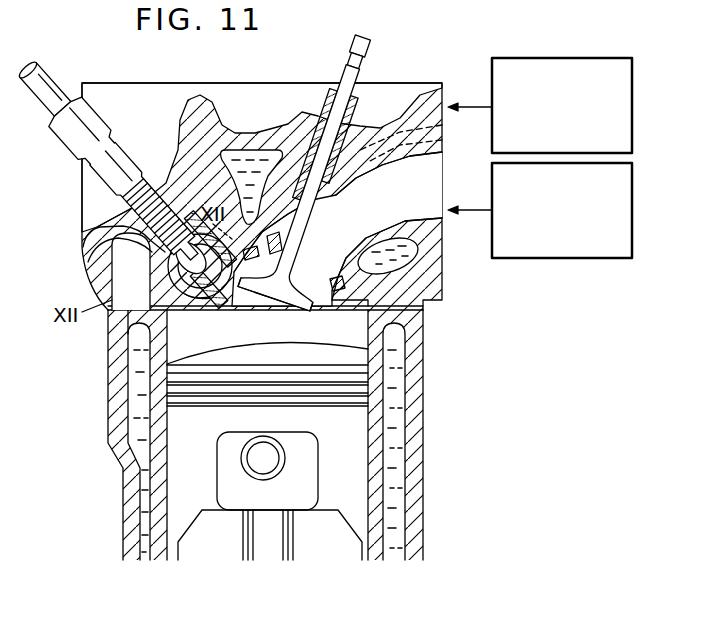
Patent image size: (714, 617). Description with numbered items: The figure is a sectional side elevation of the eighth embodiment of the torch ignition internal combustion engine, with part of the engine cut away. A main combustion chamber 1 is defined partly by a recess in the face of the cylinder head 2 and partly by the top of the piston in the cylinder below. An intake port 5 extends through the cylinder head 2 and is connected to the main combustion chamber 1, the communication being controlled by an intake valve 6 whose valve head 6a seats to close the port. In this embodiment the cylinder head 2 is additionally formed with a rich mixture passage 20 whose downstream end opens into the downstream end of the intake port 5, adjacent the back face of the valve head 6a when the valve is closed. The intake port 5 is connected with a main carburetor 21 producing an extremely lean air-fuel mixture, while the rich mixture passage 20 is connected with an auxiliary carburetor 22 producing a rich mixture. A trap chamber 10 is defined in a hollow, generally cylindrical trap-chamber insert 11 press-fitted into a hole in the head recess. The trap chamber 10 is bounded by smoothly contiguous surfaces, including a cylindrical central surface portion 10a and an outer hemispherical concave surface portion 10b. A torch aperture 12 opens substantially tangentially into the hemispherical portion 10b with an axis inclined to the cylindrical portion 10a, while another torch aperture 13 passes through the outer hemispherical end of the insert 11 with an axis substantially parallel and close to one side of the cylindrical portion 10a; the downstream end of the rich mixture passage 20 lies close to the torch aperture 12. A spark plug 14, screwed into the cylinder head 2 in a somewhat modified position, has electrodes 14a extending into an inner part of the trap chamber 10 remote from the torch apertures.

The main combustion chamber 1 is at (303, 343).
The cylinder head 2 is at (262, 135).
The intake port 5 is at (353, 228).
The intake valve 6 is at (318, 183).
The valve head 6a is at (275, 300).
The trap chamber 10 is at (152, 261).
The cylindrical central surface portion 10a is at (180, 276).
The outer hemispherical concave surface portion 10b is at (188, 294).
The trap-chamber insert 11 is at (87, 256).
The torch aperture 12 is at (243, 268).
The torch aperture 13 is at (203, 296).
The spark plug 14 is at (150, 178).
The electrodes 14a is at (97, 227).
The rich mixture passage 20 is at (391, 137).
The main carburetor 21 is at (634, 204).
The auxiliary carburetor 22 is at (634, 101).